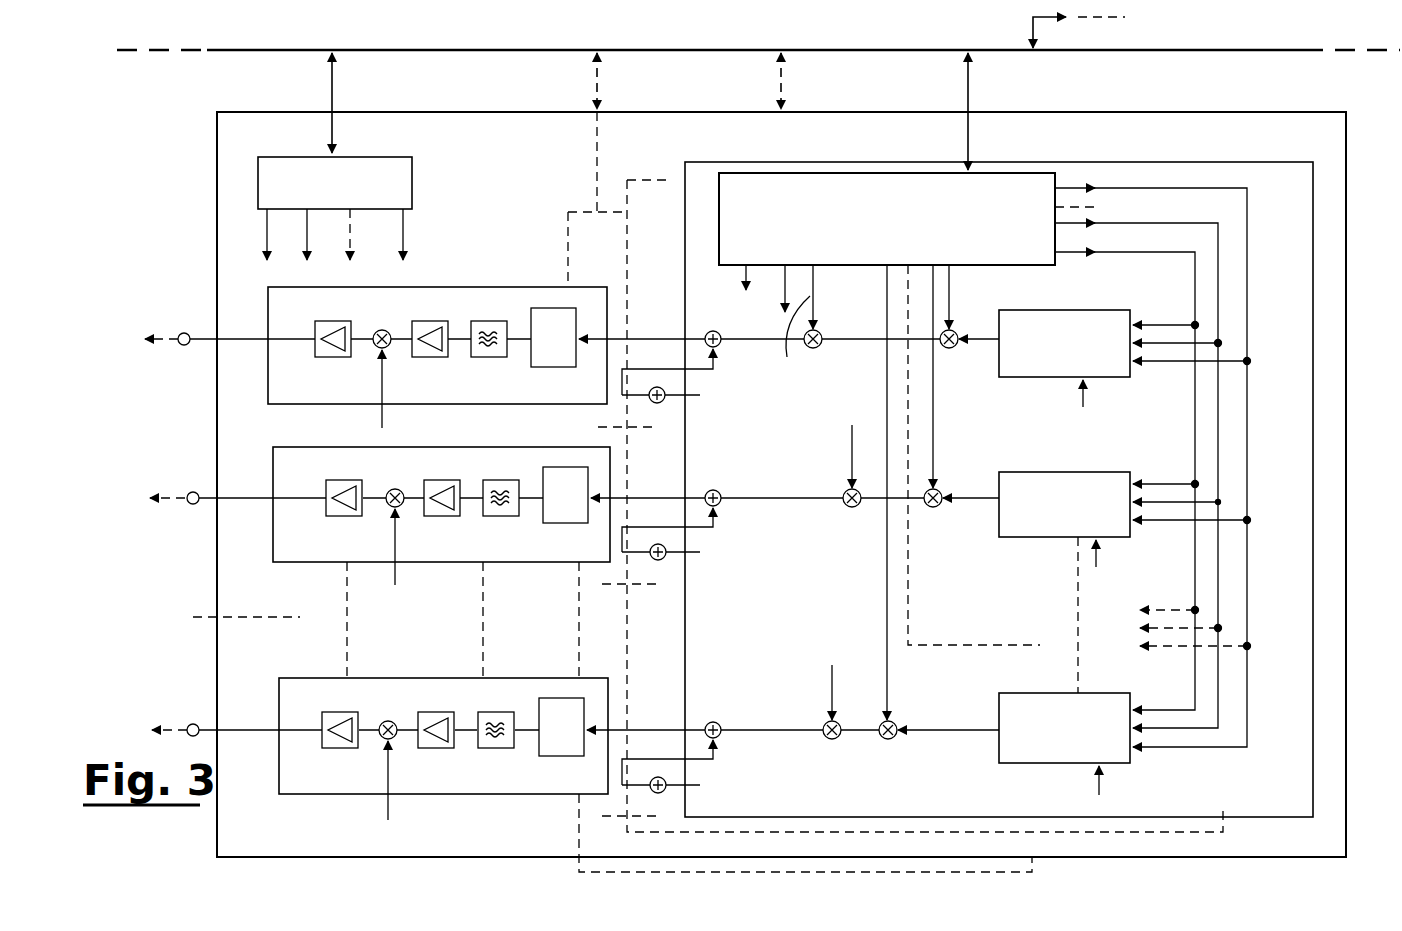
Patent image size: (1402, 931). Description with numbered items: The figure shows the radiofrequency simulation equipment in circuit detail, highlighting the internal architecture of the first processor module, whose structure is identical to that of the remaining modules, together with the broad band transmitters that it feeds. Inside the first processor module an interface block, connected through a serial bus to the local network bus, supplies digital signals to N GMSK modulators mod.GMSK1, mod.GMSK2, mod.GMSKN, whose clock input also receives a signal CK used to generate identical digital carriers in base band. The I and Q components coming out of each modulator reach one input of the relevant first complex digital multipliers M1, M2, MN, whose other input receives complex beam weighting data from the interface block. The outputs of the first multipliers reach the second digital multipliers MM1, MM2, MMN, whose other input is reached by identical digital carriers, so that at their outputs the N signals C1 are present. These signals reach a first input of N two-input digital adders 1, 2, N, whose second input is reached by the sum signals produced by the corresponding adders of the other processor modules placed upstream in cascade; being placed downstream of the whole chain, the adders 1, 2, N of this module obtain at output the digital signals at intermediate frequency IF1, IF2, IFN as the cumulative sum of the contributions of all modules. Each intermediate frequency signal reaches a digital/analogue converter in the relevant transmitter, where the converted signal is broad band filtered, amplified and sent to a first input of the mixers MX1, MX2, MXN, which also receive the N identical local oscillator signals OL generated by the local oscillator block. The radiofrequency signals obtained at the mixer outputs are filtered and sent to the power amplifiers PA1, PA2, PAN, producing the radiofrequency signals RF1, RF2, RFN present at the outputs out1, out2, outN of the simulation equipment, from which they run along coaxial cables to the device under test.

The local oscillator signal OL is at (335, 514).
The radiofrequency signal RF1 is at (128, 342).
The radiofrequency signal RF2 is at (131, 501).
The radiofrequency signal RFN is at (133, 733).
The radiofrequency output out1 is at (231, 327).
The radiofrequency output out2 is at (240, 486).
The radiofrequency output outN is at (237, 718).
The power amplifier PA1 is at (333, 358).
The power amplifier PA2 is at (345, 517).
The power amplifier PAN is at (341, 750).
The mixer MX1 is at (384, 322).
The mixer MX2 is at (396, 481).
The mixer MXN is at (390, 712).
The digital signal at intermediate frequency IF1 is at (642, 324).
The digital signal at intermediate frequency IF2 is at (648, 483).
The digital signal at intermediate frequency IFN is at (646, 715).
The digital adder 1 is at (711, 329).
The digital adder 2 is at (712, 488).
The digital adder N is at (720, 737).
The signal C1 is at (755, 340).
The second digital multiplier MM1 is at (842, 306).
The second digital multiplier MM2 is at (845, 507).
The second digital multiplier MMN is at (826, 738).
The first complex digital multiplier M1 is at (957, 347).
The first complex digital multiplier M2 is at (940, 506).
The first complex digital multiplier MN is at (895, 738).
The GMSK modulator mod.GMSK1 is at (1125, 343).
The GMSK modulator mod.GMSK2 is at (1125, 582).
The GMSK modulator mod.GMSKN is at (1064, 728).
The clock signal CK is at (1113, 588).